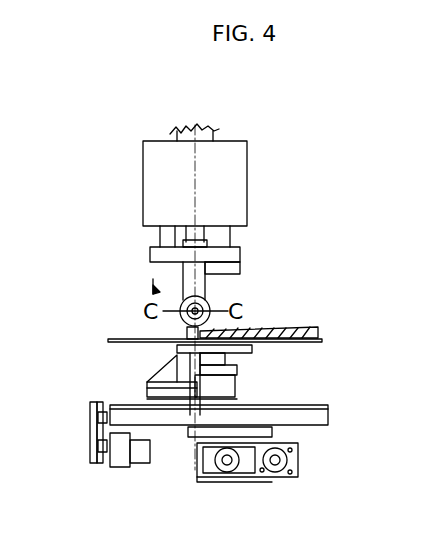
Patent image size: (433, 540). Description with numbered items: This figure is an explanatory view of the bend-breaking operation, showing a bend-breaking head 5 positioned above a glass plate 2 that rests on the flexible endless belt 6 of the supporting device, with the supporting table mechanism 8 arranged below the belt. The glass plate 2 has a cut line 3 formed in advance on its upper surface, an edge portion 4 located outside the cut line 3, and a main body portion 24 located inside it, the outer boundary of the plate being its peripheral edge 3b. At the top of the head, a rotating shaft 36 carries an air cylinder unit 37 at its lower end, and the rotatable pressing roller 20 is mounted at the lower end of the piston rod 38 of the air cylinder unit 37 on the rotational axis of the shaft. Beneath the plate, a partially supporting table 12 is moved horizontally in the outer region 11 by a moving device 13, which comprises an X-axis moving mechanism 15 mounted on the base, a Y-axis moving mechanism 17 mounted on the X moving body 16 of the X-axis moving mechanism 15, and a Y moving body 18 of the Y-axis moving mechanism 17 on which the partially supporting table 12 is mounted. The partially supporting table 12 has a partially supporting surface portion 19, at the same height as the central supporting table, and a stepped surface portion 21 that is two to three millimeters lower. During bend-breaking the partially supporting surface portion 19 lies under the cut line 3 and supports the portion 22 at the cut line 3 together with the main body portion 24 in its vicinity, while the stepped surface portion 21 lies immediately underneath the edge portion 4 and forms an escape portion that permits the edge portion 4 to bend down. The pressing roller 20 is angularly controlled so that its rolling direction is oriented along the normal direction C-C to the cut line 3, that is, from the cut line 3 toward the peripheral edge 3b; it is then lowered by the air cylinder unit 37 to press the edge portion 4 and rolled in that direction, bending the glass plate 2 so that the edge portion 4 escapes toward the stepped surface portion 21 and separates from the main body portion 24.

The glass plate 2 is at (297, 329).
The cut line 3 is at (237, 329).
The peripheral edge 3b is at (185, 332).
The edge portion 4 is at (187, 333).
The bend-breaking head 5 is at (140, 237).
The endless belt 6 is at (130, 340).
The supporting table mechanism 8 is at (125, 352).
The outer region 11 is at (340, 383).
The partially supporting table 12 is at (237, 377).
The moving device 13 is at (198, 345).
The X-axis moving mechanism 15 is at (243, 468).
The X moving body 16 is at (215, 428).
The Y-axis moving mechanism 17 is at (308, 415).
The Y moving body 18 is at (152, 403).
The partially supporting surface portion 19 is at (237, 352).
The pressing roller 20 is at (208, 305).
The stepped surface portion 21 is at (190, 345).
The portion at the cut line 22 is at (225, 336).
The main body portion 24 is at (316, 332).
The rotating shaft 36 is at (205, 130).
The air cylinder unit 37 is at (233, 188).
The piston rod 38 is at (200, 243).